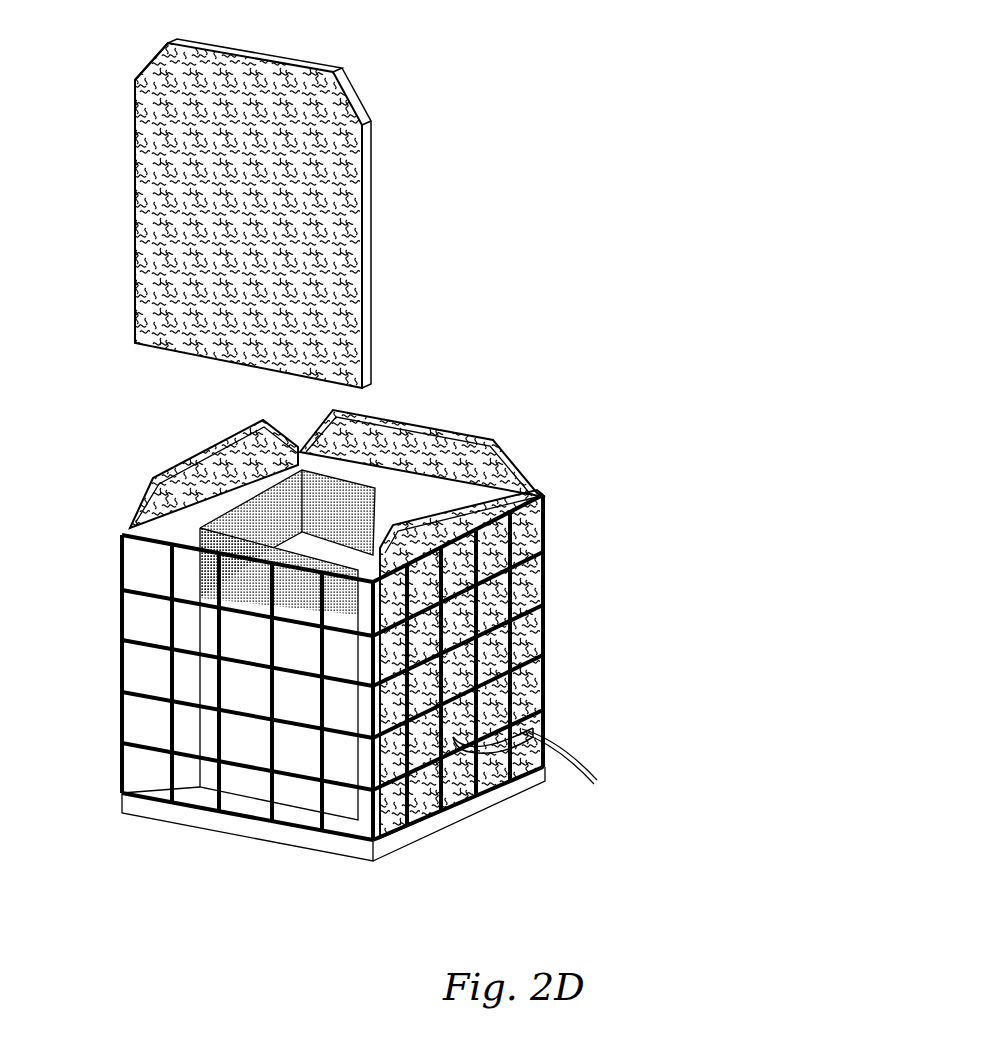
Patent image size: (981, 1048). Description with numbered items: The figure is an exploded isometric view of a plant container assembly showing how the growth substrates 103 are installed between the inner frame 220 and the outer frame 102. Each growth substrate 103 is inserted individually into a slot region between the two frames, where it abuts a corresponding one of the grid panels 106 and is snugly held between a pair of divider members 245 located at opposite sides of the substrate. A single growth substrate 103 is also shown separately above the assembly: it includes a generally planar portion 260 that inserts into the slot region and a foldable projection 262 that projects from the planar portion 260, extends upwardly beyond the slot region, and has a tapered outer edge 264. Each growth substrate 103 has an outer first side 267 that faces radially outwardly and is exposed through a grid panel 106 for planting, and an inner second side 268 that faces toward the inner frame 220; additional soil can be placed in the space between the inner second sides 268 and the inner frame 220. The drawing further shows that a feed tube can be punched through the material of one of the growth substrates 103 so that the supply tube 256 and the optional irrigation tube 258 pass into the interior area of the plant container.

The outer frame 102 is at (361, 587).
The growth substrate 103 is at (210, 448).
The grid panel 106 is at (172, 583).
The inner frame 220 is at (240, 645).
The divider member 245 is at (133, 520).
The supply tube 256 is at (545, 735).
The irrigation tube 258 is at (580, 772).
The planar portion 260 is at (268, 194).
The foldable projection 262 is at (185, 76).
The tapered outer edge 264 is at (262, 62).
The outer first side 267 is at (298, 170).
The inner second side 268 is at (372, 243).